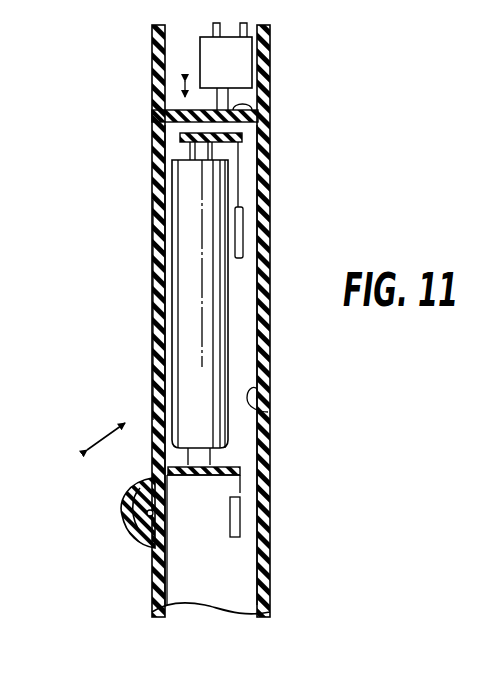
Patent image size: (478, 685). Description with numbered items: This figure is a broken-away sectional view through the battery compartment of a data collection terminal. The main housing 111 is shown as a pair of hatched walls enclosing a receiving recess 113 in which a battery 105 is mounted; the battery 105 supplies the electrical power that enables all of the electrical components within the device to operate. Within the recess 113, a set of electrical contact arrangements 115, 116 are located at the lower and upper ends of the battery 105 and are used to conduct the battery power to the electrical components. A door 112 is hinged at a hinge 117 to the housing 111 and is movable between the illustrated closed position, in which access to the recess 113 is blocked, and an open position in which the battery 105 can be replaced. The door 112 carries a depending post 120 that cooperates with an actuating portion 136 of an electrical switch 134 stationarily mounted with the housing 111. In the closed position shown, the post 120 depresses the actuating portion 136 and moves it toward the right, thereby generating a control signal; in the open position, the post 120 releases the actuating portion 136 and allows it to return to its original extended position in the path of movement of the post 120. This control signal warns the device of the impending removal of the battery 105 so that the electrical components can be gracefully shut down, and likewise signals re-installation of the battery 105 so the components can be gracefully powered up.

The battery 105 is at (192, 229).
The main housing 111 is at (155, 580).
The door 112 is at (157, 312).
The receiving recess 113 is at (268, 412).
The electrical contact arrangement 115 is at (240, 466).
The electrical contact arrangement 116 is at (242, 136).
The hinge 117 is at (124, 513).
The depending post 120 is at (153, 110).
The electrical switch 134 is at (243, 61).
The actuating portion 136 is at (258, 106).